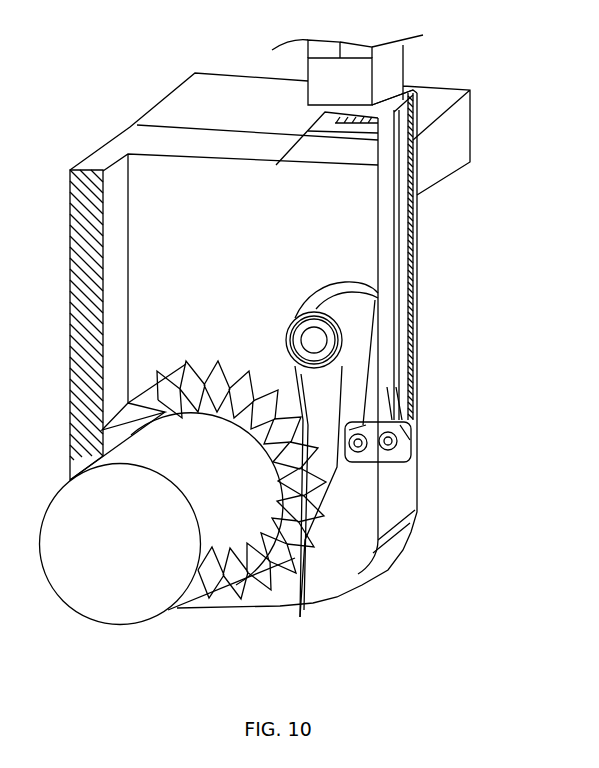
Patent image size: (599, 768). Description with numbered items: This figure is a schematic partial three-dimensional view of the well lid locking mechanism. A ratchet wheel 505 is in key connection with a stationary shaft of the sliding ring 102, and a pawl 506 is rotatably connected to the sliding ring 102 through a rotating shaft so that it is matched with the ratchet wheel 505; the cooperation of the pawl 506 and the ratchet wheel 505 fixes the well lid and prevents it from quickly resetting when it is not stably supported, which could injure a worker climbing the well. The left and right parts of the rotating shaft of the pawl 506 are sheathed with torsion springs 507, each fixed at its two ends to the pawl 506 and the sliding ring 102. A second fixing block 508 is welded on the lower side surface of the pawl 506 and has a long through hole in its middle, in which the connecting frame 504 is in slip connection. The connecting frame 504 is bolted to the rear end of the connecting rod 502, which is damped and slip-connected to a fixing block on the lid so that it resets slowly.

The sliding ring 102 is at (358, 573).
The connecting rod 502 is at (392, 75).
The connecting frame 504 is at (388, 248).
The ratchet wheel 505 is at (245, 600).
The pawl 506 is at (302, 603).
The torsion springs 507 is at (330, 325).
The second fixing block 508 is at (408, 440).